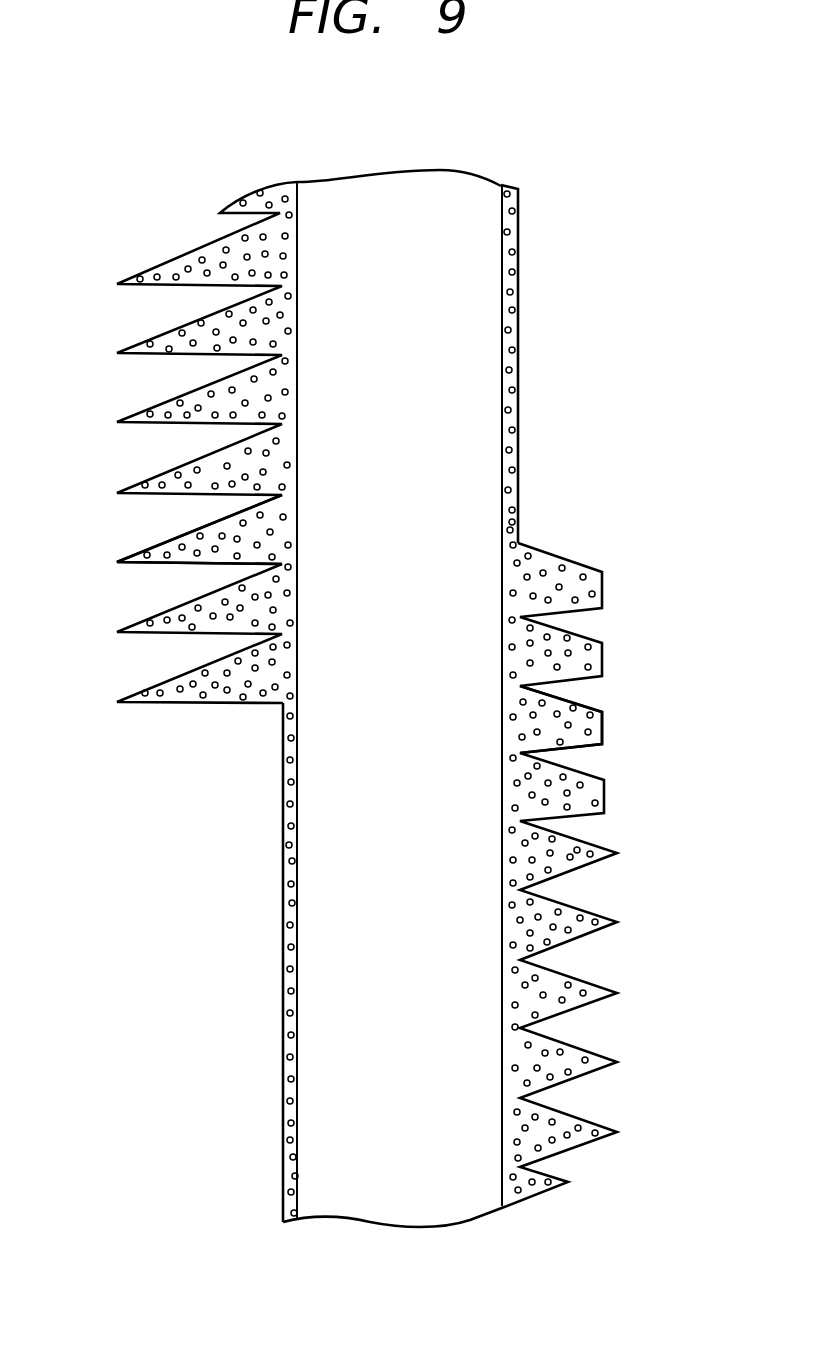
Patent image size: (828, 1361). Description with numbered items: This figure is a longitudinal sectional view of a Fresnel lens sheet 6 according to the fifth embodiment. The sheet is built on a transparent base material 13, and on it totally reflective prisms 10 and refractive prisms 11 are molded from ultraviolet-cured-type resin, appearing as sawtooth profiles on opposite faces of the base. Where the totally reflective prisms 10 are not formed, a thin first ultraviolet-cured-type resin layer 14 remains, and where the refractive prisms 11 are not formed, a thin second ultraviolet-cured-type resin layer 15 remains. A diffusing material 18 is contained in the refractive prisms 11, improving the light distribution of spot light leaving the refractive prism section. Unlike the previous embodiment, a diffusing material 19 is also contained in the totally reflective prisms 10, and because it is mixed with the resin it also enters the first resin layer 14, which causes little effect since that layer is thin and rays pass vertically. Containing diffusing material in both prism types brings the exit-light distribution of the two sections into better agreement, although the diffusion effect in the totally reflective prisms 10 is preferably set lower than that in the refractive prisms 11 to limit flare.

The Fresnel lens sheet 6 is at (470, 172).
The totally reflective prisms 10 is at (187, 250).
The diffusing material 19 is at (178, 538).
The first ultraviolet-cured-type resin layer 14 is at (287, 870).
The second ultraviolet-cured-type resin layer 15 is at (512, 340).
The refractive prisms 11 is at (572, 1112).
The diffusing material 18 is at (568, 725).
The transparent base material 13 is at (440, 1210).